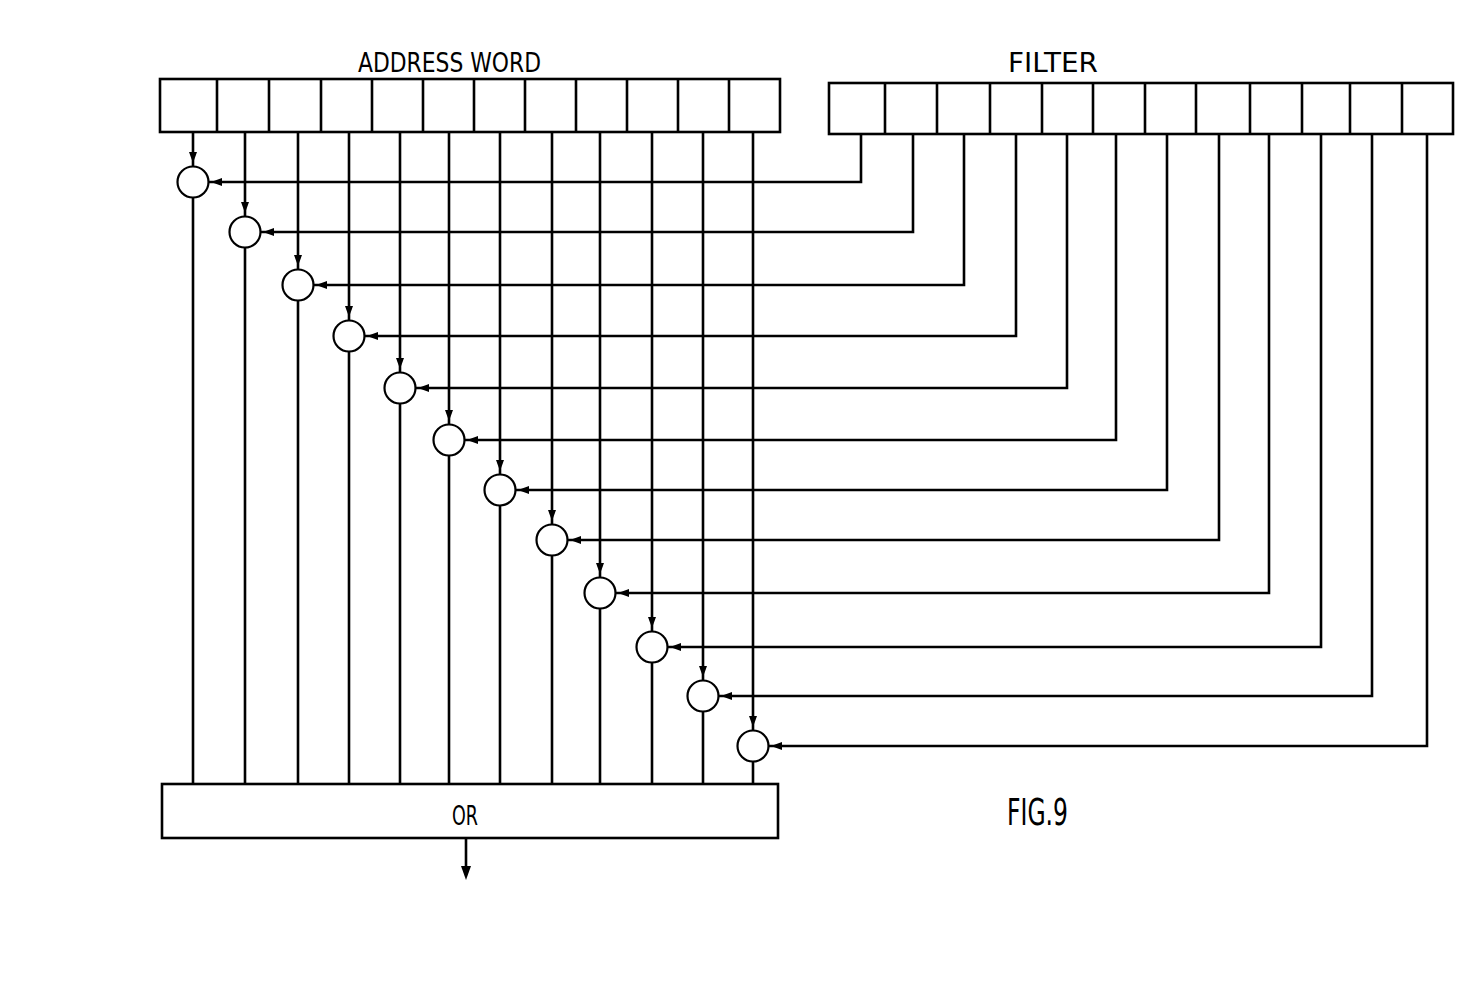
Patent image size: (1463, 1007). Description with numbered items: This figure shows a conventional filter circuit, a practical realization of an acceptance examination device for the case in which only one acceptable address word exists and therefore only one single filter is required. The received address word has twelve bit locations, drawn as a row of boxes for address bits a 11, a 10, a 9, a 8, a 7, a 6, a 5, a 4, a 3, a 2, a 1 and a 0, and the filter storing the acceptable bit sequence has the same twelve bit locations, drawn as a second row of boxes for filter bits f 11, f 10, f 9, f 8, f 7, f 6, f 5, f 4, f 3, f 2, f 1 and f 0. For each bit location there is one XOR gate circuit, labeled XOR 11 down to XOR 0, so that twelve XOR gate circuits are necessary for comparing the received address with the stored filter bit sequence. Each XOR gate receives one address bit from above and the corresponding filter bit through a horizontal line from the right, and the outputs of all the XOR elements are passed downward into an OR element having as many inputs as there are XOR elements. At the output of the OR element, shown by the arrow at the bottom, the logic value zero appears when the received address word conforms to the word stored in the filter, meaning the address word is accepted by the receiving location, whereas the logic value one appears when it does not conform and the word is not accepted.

The XOR 11 bit comparator (address bit a11 / filter bit f11) 11 is at (491, 441).
The XOR 10 bit comparator (address bit a10 / filter bit f10) 10 is at (518, 441).
The XOR 9 bit comparator (address bit a9 / filter bit f9) 9 is at (542, 441).
The XOR 8 bit comparator (address bit a8 / filter bit f8) 8 is at (568, 441).
The XOR 7 bit comparator (address bit a7 / filter bit f7) 7 is at (594, 441).
The XOR 6 bit comparator (address bit a6 / filter bit f6) 6 is at (620, 441).
The XOR 5 bit comparator (address bit a5 / filter bit f5) 5 is at (645, 441).
The XOR 4 bit comparator (address bit a4 / filter bit f4) 4 is at (672, 441).
The XOR 3 bit comparator (address bit a3 / filter bit f3) 3 is at (698, 441).
The XOR 2 bit comparator (address bit a2 / filter bit f2) 2 is at (723, 441).
The XOR 1 bit comparator (address bit a1 / filter bit f1) 1 is at (748, 441).
The XOR 0 bit comparator (address bit a0 / filter bit f0) 0 is at (774, 441).